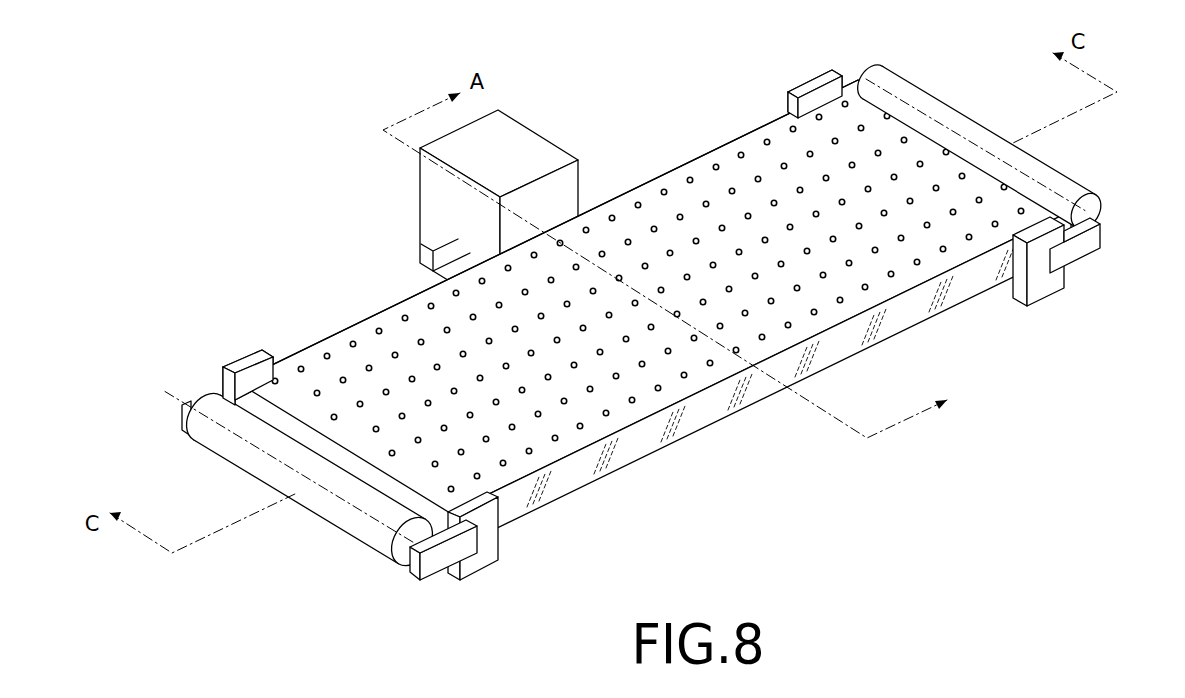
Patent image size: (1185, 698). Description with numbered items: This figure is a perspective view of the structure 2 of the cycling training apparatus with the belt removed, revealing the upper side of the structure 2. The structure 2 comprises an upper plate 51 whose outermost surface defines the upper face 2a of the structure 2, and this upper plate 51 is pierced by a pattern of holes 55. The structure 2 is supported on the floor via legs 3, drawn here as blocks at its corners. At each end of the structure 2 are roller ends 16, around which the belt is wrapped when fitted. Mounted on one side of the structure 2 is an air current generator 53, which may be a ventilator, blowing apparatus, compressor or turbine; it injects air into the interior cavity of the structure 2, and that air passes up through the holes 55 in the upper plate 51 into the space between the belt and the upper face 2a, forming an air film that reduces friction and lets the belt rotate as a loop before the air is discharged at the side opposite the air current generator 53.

The structure 2 is at (647, 280).
The upper face of the structure 2a is at (340, 329).
The legs 3 is at (428, 256).
The roller ends 16 is at (333, 518).
The upper plate 51 is at (654, 289).
The air current generator 53 is at (416, 212).
The holes 55 is at (767, 138).